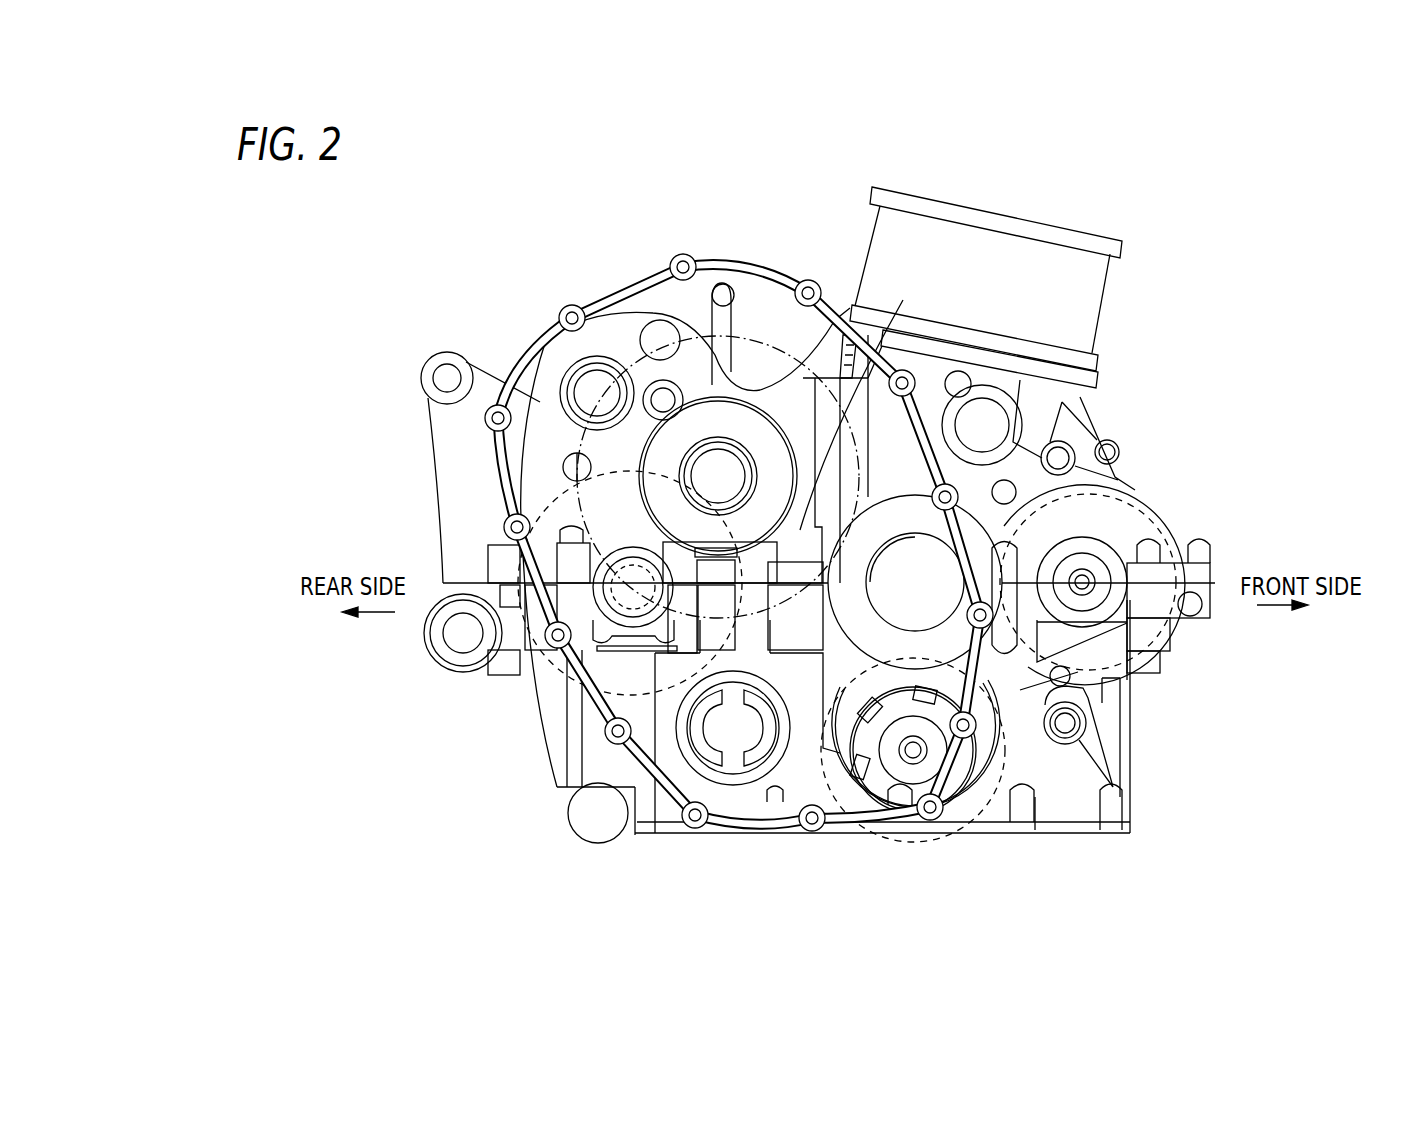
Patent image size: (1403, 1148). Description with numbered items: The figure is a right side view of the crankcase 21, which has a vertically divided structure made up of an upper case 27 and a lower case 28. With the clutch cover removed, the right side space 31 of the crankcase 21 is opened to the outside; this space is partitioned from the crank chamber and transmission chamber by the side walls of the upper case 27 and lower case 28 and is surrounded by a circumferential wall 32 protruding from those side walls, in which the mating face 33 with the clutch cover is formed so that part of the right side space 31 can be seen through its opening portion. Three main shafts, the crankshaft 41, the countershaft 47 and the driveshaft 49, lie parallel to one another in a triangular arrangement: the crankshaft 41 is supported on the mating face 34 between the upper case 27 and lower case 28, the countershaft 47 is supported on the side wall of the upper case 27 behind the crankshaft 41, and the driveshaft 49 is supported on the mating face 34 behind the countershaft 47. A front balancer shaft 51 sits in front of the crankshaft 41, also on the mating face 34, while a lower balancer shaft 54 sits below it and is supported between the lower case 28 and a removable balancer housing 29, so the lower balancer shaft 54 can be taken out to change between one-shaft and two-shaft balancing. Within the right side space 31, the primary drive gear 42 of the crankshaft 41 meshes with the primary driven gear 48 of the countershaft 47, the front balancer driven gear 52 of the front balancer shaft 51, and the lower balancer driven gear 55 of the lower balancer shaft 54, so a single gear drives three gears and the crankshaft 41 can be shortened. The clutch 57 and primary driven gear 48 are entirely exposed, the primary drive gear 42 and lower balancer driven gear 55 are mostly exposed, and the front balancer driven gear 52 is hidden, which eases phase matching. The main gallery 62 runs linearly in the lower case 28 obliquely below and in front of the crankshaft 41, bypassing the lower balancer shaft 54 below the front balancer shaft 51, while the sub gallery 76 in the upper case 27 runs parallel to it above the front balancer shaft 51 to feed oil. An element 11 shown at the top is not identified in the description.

The fuel tank 11 is at (1092, 287).
The crankcase 21 is at (1135, 378).
The upper case 27 is at (1120, 490).
The lower case 28 is at (1122, 755).
The balancer housing 29 is at (915, 847).
The right side space 31 is at (622, 702).
The circumferential wall 32 is at (628, 748).
The mating face with the clutch cover 33 is at (673, 797).
The mating face between the upper case and the lower case 34 is at (845, 395).
The crankshaft 41 is at (965, 425).
The primary drive gear 42 is at (920, 560).
The countershaft 47 is at (733, 480).
The primary driven gear 48 is at (739, 513).
The clutch 57 is at (702, 330).
The driveshaft 49 is at (582, 492).
The front balancer shaft 51 is at (1100, 555).
The front balancer driven gear 52 is at (1170, 517).
The lower balancer shaft 54 is at (897, 767).
The lower balancer driven gear 55 is at (828, 777).
The main gallery 62 is at (1070, 723).
The sub gallery 76 is at (1062, 456).